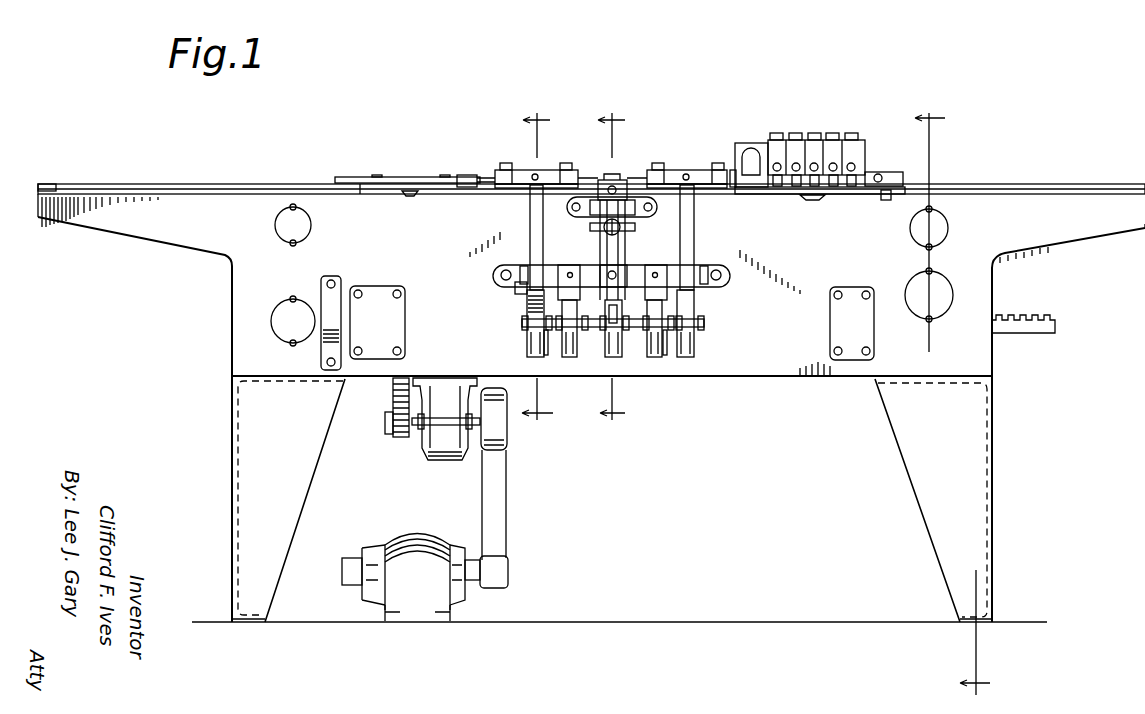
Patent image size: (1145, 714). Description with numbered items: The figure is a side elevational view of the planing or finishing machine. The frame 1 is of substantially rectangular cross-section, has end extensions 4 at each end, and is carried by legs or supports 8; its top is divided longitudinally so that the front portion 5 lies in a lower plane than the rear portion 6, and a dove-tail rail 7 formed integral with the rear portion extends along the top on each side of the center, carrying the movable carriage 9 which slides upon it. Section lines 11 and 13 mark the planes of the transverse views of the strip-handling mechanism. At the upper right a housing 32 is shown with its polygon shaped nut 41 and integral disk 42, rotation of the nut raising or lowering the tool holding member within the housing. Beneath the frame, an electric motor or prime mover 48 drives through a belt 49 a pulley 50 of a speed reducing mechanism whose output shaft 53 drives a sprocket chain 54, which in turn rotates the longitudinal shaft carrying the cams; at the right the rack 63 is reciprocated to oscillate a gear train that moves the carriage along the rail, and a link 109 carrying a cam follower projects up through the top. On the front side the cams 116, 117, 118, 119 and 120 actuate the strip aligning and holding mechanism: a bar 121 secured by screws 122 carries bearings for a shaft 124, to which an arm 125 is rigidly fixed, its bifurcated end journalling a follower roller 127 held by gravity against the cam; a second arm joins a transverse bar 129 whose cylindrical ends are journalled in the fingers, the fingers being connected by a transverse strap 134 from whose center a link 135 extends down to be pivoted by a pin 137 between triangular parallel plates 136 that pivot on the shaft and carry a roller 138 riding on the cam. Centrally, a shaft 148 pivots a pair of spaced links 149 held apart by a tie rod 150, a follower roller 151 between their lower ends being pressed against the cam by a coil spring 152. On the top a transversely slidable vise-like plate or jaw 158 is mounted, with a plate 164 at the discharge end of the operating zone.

The frame 1 is at (976, 276).
The end extensions 4 is at (172, 226).
The front portion of the top 5 is at (246, 195).
The rear portion of the top 6 is at (222, 184).
The rail 7 is at (405, 178).
The legs or supports 8 is at (248, 457).
The movable carriage 9 is at (827, 130).
The section line 11 is at (537, 268).
The section line 13 is at (612, 271).
The housing 32 is at (855, 158).
The polygon shaped nut 41 is at (848, 138).
The disk 42 is at (770, 145).
The electric motor or prime mover 48 is at (405, 545).
The belt 49 is at (497, 487).
The pulley 50 is at (505, 445).
The output shaft 53 is at (385, 426).
The sprocket chain 54 is at (393, 403).
The rack 63 is at (1048, 333).
The link 109 is at (885, 200).
The cam 116 is at (527, 350).
The cam 117 is at (569, 342).
The cam 118 is at (608, 352).
The cam 119 is at (655, 352).
The cam 120 is at (693, 352).
The bar 121 is at (720, 284).
The screws 122 is at (727, 280).
The shaft 124 is at (516, 284).
The arm 125 is at (580, 263).
The follower roller 127 is at (546, 340).
The transverse bar 129 is at (522, 170).
The transverse strap 134 is at (500, 186).
The link 135 is at (530, 233).
The parallel plates 136 is at (526, 305).
The pin 137 is at (528, 270).
The roller 138 is at (525, 322).
The shaft 148 is at (610, 190).
The spaced links 149 is at (596, 246).
The tie rod 150 is at (625, 230).
The follower roller 151 is at (618, 342).
The coil spring 152 is at (632, 222).
The vise-like plate or jaw 158 is at (492, 188).
The plate 164 is at (845, 195).